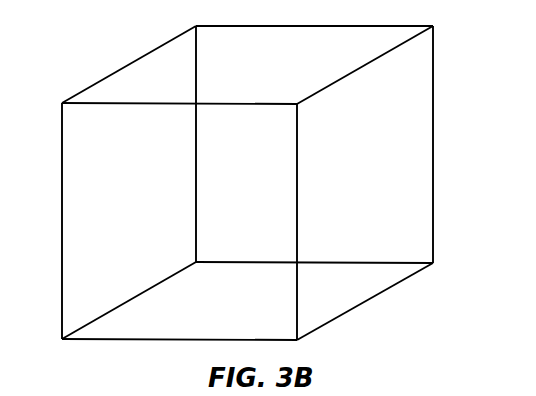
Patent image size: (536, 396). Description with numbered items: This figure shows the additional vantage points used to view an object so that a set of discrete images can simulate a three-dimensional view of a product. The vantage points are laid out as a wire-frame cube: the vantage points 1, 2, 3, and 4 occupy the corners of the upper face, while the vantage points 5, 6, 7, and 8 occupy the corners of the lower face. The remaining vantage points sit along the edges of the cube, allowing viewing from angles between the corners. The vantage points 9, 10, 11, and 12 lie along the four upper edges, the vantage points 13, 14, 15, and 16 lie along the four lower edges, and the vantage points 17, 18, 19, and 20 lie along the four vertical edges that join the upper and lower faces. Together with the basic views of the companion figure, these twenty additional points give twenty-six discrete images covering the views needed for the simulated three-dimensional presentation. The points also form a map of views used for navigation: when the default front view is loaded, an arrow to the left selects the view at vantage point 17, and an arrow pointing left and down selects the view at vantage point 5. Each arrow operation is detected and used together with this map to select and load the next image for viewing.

The vantage point 1 is at (54, 100).
The vantage point 2 is at (186, 17).
The vantage point 3 is at (289, 93).
The vantage point 4 is at (422, 15).
The vantage point 5 is at (52, 329).
The vantage point 6 is at (186, 252).
The vantage point 7 is at (288, 326).
The vantage point 8 is at (424, 250).
The vantage point 9 is at (129, 64).
The vantage point 10 is at (314, 13).
The vantage point 11 is at (365, 65).
The vantage point 12 is at (179, 92).
The vantage point 13 is at (129, 300).
The vantage point 14 is at (314, 249).
The vantage point 15 is at (365, 301).
The vantage point 16 is at (179, 328).
The vantage point 17 is at (45, 221).
The vantage point 18 is at (185, 144).
The vantage point 19 is at (421, 144).
The vantage point 20 is at (281, 222).